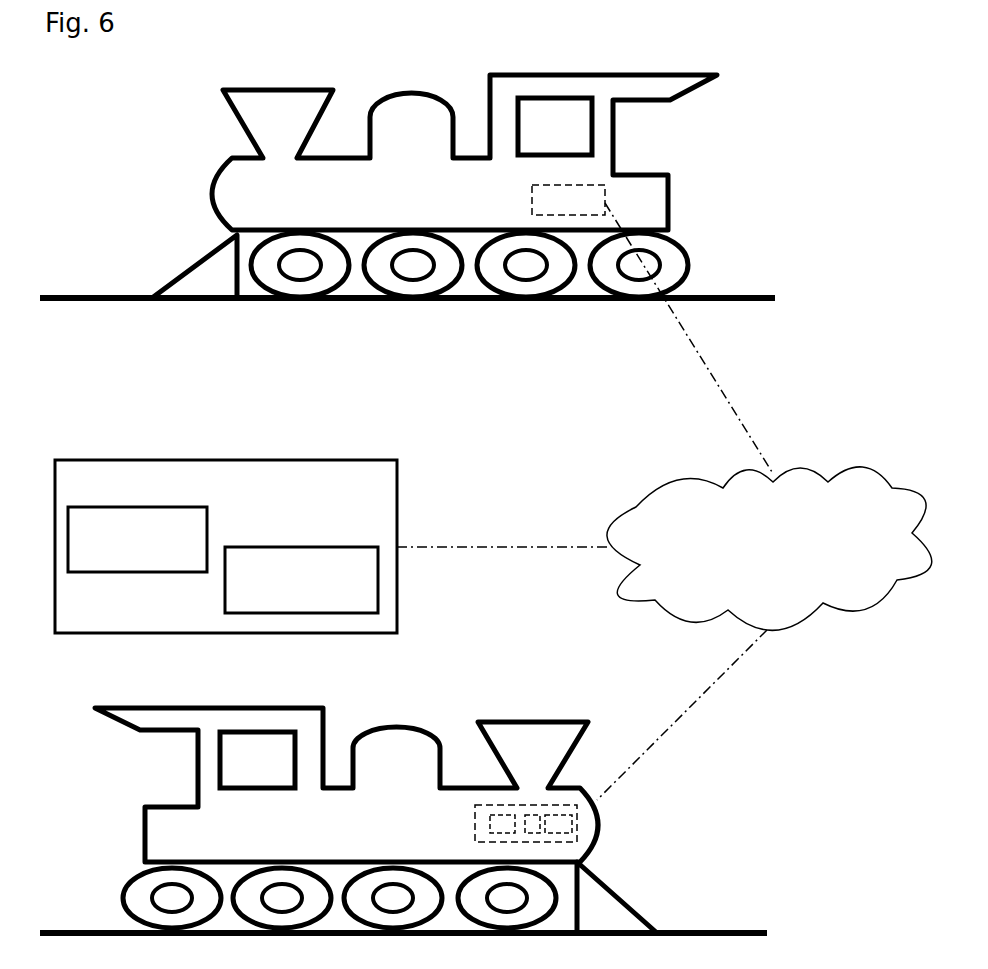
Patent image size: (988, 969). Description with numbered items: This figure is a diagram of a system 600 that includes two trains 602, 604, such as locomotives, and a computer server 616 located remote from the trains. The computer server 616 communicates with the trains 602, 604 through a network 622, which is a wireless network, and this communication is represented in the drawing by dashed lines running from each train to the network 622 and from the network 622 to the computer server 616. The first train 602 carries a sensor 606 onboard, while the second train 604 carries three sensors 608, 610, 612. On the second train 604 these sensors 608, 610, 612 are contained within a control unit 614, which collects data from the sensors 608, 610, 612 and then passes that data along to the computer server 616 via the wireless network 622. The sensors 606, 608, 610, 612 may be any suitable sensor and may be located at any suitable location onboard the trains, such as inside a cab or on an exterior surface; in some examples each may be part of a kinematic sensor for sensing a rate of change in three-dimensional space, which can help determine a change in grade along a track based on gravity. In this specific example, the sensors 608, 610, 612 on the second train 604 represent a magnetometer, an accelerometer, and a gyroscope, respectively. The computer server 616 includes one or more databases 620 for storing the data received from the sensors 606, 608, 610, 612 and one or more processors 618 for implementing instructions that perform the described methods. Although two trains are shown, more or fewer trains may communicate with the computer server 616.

The system 600 is at (785, 113).
The train 602 is at (406, 62).
The train 604 is at (126, 707).
The sensor 606 is at (592, 193).
The sensor 608 is at (500, 813).
The sensor 610 is at (537, 815).
The sensor 612 is at (557, 815).
The control unit 614 is at (577, 830).
The computer server 616 is at (318, 460).
The processors 618 is at (313, 613).
The databases 620 is at (90, 505).
The network 622 is at (635, 505).